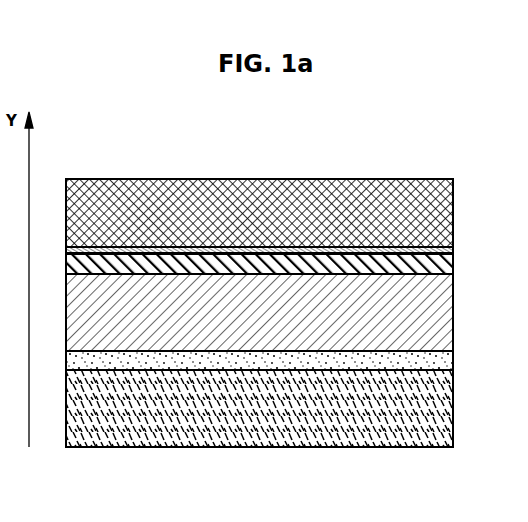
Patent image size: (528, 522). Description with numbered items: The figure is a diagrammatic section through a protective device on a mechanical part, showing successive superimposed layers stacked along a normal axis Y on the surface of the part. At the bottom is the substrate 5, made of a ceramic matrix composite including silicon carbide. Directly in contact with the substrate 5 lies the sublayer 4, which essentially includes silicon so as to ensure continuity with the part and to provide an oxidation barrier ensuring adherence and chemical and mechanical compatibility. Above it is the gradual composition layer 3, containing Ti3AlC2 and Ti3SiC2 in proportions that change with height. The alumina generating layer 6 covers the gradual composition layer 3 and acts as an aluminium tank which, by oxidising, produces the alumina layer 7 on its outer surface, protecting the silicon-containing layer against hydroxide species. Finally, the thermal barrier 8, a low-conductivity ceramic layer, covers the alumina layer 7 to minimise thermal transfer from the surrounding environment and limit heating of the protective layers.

The thermal barrier 8 is at (64, 181).
The alumina layer 7 is at (455, 251).
The alumina generating layer 6 is at (64, 255).
The gradual composition layer 3 is at (64, 277).
The sublayer 4 is at (64, 352).
The substrate 5 is at (64, 373).